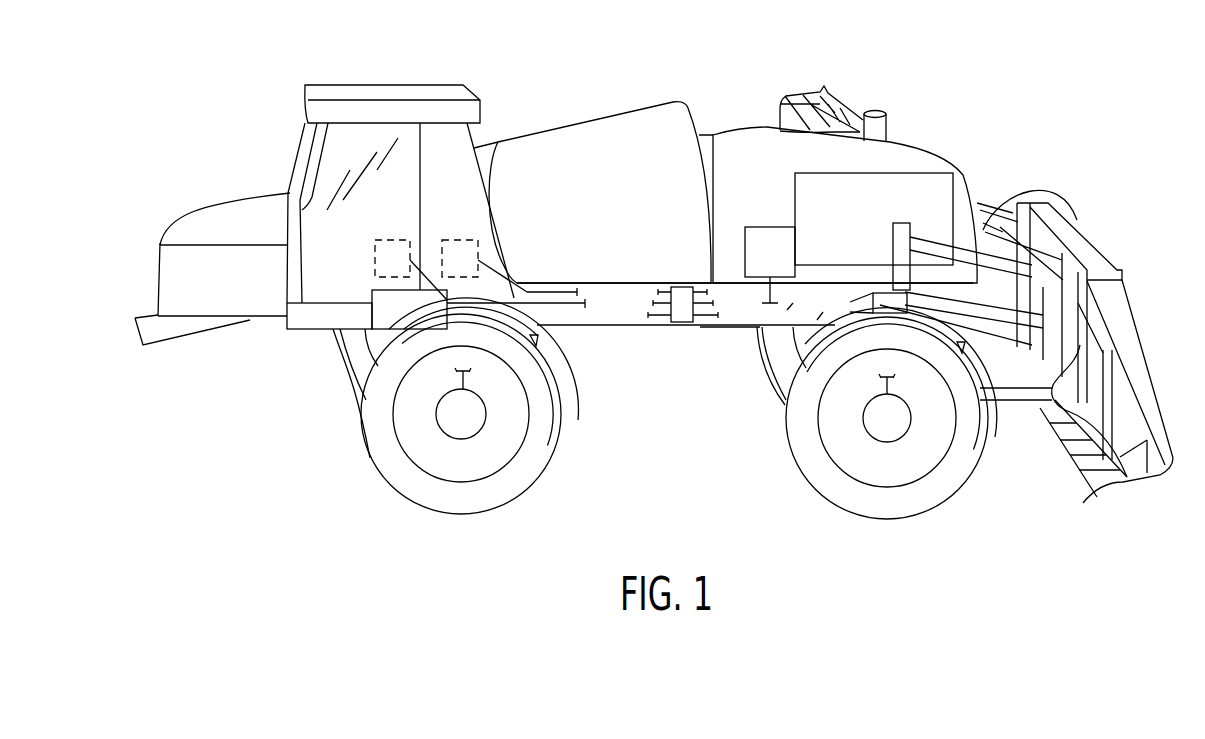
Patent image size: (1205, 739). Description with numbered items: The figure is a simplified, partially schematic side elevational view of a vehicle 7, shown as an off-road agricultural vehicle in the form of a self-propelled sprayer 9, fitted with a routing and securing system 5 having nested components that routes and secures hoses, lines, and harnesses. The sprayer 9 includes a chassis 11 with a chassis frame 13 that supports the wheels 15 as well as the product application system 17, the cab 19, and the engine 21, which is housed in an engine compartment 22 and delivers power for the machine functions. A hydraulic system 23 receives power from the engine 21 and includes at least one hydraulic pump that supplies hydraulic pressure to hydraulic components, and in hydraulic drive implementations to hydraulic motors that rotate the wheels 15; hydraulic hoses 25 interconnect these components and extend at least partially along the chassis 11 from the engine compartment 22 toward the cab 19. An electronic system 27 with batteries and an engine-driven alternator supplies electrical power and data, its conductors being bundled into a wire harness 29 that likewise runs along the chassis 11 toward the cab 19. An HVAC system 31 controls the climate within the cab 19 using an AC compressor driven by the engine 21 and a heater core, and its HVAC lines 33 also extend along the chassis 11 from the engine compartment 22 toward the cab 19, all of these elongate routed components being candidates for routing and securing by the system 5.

The routing and securing system 5 is at (687, 330).
The vehicle 7 is at (630, 60).
The self-propelled sprayer 9 is at (258, 137).
The chassis 11 is at (745, 334).
The chassis frame 13 is at (627, 328).
The wheels 15 is at (530, 500).
The product application system 17 is at (1082, 165).
The cab 19 is at (365, 77).
The engine 21 is at (900, 190).
The engine compartment 22 is at (957, 138).
The hydraulic system 23 is at (772, 225).
The hydraulic hoses 25 is at (466, 382).
The electronic system 27 is at (458, 238).
The wire harness 29 is at (553, 290).
The HVAC system 31 is at (370, 258).
The HVAC lines 33 is at (545, 300).